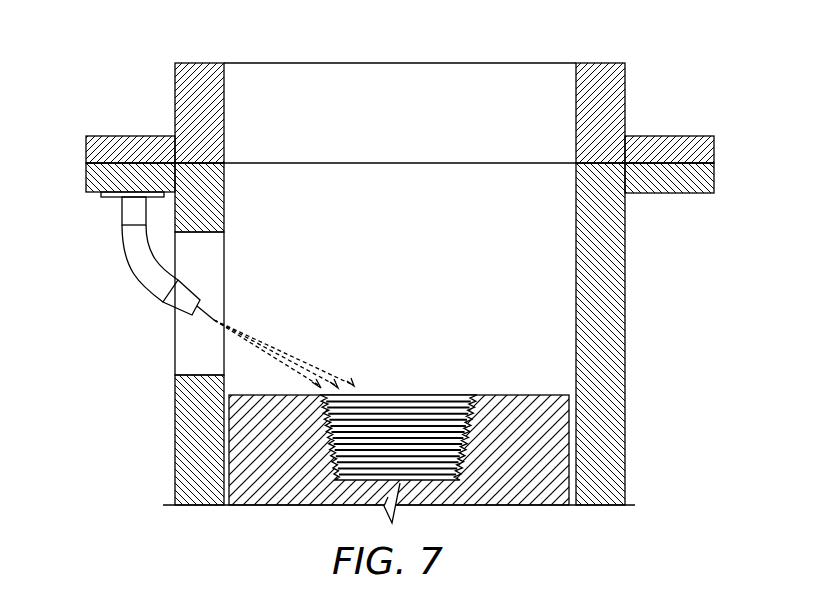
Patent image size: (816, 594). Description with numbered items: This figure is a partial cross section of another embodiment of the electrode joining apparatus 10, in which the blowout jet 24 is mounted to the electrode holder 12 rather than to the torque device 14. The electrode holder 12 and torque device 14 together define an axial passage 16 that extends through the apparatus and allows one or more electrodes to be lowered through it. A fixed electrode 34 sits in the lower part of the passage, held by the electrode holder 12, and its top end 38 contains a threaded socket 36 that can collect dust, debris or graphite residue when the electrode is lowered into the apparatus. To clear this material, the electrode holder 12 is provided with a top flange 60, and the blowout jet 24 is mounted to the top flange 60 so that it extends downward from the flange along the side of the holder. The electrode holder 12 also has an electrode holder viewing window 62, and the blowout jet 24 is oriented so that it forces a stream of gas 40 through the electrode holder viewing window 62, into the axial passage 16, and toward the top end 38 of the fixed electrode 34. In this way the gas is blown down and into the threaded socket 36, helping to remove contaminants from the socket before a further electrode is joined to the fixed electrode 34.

The electrode joining apparatus 10 is at (685, 61).
The electrode holder 12 is at (187, 413).
The torque device 14 is at (90, 148).
The axial passage 16 is at (407, 193).
The blowout jet 24 is at (128, 268).
The fixed electrode 34 is at (509, 490).
The threaded socket 36 is at (455, 410).
The top end 38 is at (521, 405).
The stream of gas 40 is at (286, 352).
The top flange 60 is at (92, 180).
The electrode holder viewing window 62 is at (212, 273).